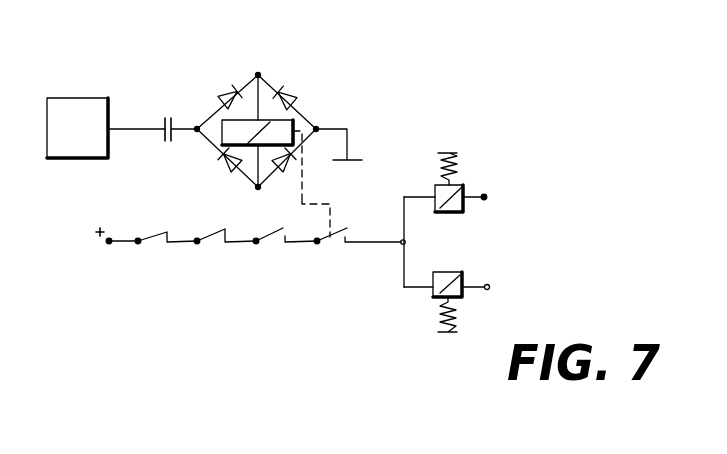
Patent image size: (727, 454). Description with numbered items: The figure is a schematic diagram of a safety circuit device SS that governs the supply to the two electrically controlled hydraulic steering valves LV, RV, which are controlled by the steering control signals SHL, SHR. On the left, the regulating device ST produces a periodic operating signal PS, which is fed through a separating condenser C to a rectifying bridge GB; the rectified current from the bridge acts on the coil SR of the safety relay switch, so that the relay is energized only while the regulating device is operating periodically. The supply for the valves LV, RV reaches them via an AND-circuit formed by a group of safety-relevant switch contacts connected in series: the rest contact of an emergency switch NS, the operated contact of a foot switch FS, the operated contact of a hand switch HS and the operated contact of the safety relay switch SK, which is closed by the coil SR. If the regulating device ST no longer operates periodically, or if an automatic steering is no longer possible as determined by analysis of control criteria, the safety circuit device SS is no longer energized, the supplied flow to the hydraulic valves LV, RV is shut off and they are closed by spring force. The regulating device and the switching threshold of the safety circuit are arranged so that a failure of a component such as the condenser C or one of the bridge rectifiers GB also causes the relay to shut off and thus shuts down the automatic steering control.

The regulating device ST is at (77, 128).
The periodic operating signal PS is at (160, 87).
The separating condenser C is at (160, 136).
The rectifying bridge GB is at (260, 76).
The coil of safety relay switch SR is at (283, 132).
The safety circuit device SS is at (88, 221).
The emergency switch NS is at (155, 237).
The foot switch FS is at (210, 235).
The hand switch HS is at (268, 238).
The safety relay switch SK is at (325, 239).
The electrically controlled steering valve LV is at (472, 173).
The steering control signal SHL is at (475, 205).
The steering control signal SHR is at (478, 285).
The electrically controlled steering valve RV is at (457, 297).